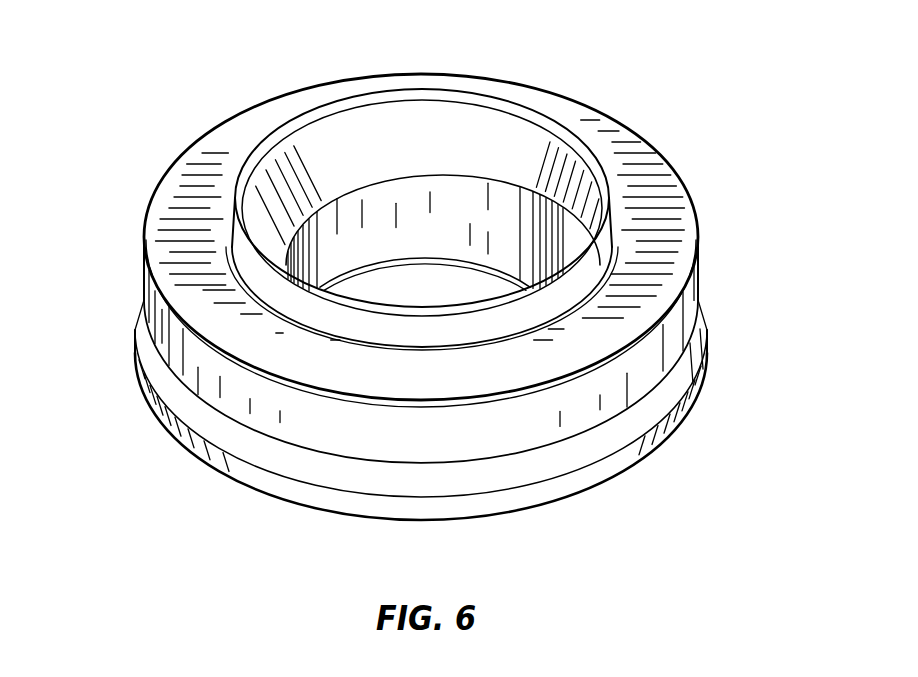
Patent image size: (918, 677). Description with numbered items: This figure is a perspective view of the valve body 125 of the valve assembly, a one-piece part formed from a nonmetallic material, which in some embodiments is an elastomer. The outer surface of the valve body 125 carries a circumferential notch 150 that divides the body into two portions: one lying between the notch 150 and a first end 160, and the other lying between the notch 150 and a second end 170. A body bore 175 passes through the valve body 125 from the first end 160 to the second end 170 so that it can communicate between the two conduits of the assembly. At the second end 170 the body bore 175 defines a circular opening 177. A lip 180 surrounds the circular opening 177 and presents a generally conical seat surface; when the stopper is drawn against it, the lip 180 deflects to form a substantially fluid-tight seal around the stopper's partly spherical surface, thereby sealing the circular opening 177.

The valve body 125 is at (147, 116).
The circumferential notch 150 is at (684, 372).
The first end 160 is at (606, 490).
The second end 170 is at (655, 190).
The body bore 175 is at (458, 217).
The circular opening 177 is at (390, 175).
The lip 180 is at (575, 160).